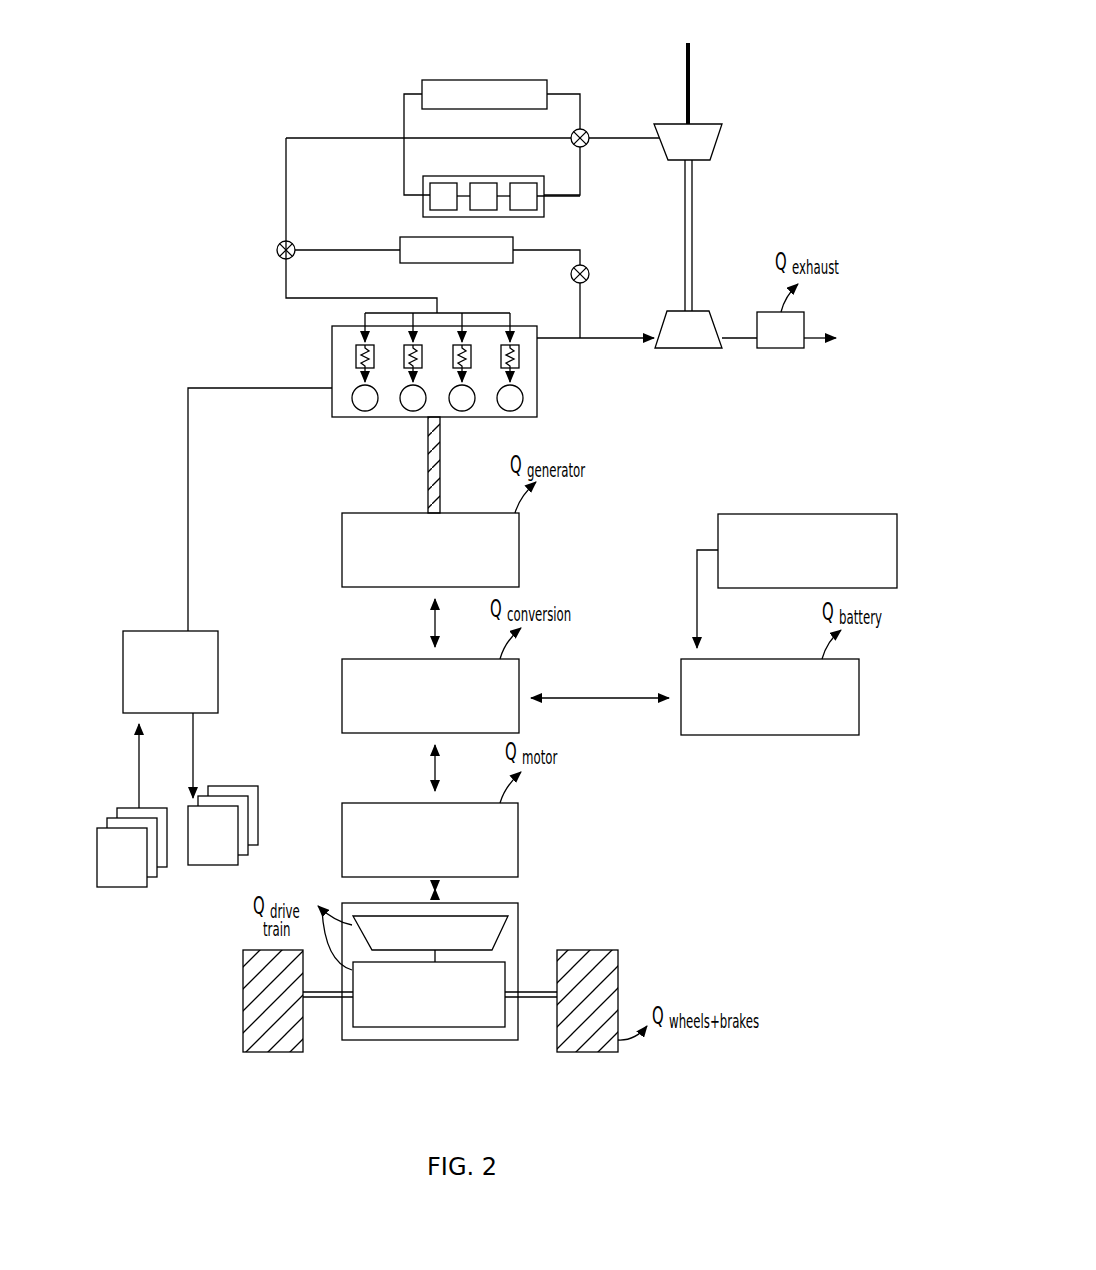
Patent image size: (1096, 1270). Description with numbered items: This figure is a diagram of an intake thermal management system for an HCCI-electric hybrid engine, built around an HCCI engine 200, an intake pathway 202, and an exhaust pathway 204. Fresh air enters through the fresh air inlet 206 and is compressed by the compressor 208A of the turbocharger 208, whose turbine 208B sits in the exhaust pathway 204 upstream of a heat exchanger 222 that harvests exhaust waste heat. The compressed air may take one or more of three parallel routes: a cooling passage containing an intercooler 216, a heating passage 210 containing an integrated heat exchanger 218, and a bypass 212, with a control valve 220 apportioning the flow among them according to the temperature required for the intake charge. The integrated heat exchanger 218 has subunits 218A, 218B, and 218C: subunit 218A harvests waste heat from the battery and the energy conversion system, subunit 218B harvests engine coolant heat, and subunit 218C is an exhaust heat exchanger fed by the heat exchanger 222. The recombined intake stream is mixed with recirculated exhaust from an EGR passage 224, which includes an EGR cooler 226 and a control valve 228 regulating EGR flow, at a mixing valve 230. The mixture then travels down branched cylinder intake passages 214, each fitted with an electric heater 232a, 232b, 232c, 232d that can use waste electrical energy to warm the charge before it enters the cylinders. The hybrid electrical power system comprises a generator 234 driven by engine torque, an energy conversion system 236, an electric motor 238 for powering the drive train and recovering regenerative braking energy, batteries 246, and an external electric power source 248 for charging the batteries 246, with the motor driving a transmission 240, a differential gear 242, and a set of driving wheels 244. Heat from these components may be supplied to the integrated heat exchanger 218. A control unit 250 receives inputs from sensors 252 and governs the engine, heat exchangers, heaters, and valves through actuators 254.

The HCCI engine 200 is at (332, 355).
The intake pathway 202 is at (282, 110).
The exhaust pathway 204 is at (625, 352).
The fresh air inlet 206 is at (691, 60).
The turbocharger 208 is at (407, 93).
The compressor 208A is at (722, 146).
The turbine 208B is at (700, 311).
The heating passage 210 is at (582, 158).
The bypass 212 is at (514, 138).
The branched cylinder intake passages 214 is at (488, 313).
The intercooler 216 is at (547, 90).
The integrated heat exchanger 218 is at (423, 208).
The battery and energy conversion system heat exchanger 218A is at (437, 183).
The engine coolant heat exchanger 218B is at (481, 183).
The exhaust heat exchanger 218C is at (528, 183).
The control valve 220 is at (588, 132).
The heat exchanger 222 is at (780, 348).
The EGR passage 224 is at (570, 236).
The EGR cooler 226 is at (400, 246).
The control valve 228 is at (589, 272).
The mixing valve 230 is at (277, 253).
The electric heater 232a is at (356, 358).
The electric heater 232b is at (408, 385).
The electric heater 232c is at (466, 382).
The electric heater 232d is at (519, 358).
The generator 234 is at (519, 548).
The energy conversion system 236 is at (519, 676).
The electric motor 238 is at (518, 818).
The transmission 240 is at (508, 931).
The differential gear 242 is at (430, 1027).
The driving wheels 244 is at (243, 997).
The batteries 246 is at (766, 659).
The external electric power source 248 is at (800, 514).
The control unit 250 is at (218, 656).
The sensors 252 is at (100, 827).
The actuators 254 is at (216, 786).